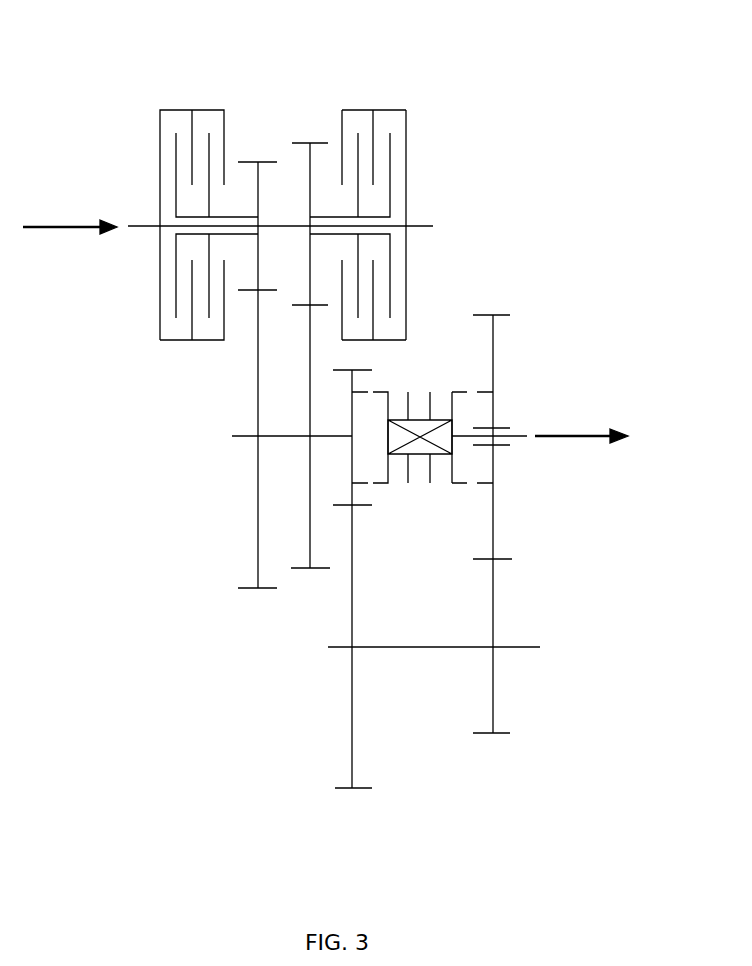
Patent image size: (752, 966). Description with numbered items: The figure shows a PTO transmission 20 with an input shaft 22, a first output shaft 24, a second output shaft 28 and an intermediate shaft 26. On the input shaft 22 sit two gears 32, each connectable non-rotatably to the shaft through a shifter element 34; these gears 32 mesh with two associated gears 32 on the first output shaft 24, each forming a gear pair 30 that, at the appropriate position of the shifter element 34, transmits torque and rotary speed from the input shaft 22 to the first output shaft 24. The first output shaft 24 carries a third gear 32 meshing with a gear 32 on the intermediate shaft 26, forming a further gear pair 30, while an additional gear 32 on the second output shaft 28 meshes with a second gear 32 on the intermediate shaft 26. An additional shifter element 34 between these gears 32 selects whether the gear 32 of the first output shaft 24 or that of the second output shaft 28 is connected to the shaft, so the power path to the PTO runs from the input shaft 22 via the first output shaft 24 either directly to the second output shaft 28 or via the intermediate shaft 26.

The PTO transmission 20 is at (600, 138).
The input shaft 22 is at (422, 223).
The first output shaft 24 is at (243, 436).
The intermediate shaft 26 is at (523, 647).
The second output shaft 28 is at (513, 433).
The gear pair 30 is at (258, 162).
The gears 32 is at (493, 593).
The shifter element 34 is at (160, 137).